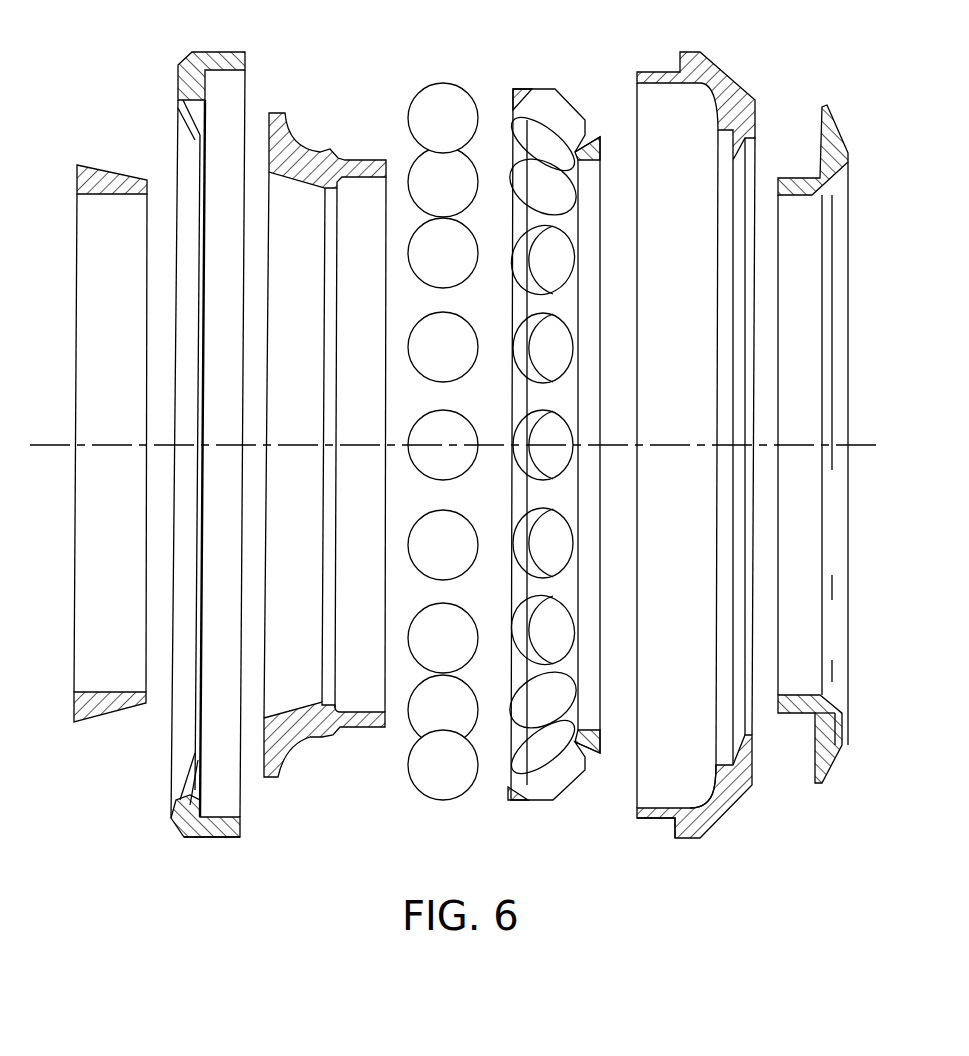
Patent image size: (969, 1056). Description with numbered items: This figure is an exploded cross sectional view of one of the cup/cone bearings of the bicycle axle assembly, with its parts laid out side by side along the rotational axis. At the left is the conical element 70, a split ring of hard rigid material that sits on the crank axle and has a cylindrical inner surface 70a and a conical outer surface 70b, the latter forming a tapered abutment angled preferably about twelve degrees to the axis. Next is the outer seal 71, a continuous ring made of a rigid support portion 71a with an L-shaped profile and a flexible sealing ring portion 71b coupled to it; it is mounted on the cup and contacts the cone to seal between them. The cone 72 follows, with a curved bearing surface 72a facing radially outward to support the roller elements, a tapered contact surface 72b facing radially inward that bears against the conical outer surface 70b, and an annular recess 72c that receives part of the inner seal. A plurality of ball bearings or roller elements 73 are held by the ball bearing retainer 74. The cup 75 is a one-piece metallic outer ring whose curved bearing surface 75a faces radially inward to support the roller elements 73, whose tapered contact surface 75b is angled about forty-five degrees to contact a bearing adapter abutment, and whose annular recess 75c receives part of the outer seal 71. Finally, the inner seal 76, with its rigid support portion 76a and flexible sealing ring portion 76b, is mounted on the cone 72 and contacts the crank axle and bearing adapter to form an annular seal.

The conical element 70 is at (101, 163).
The cylindrical inner surface 70a is at (105, 692).
The conical outer surface 70b is at (103, 712).
The outer seal 71 is at (222, 47).
The rigid support portion 71a is at (222, 818).
The flexible sealing ring portion 71b is at (208, 840).
The cone 72 is at (278, 106).
The curved bearing surface 72a is at (301, 743).
The tapered contact surface 72b is at (295, 704).
The annular recess 72c is at (352, 708).
The roller elements 73 is at (435, 81).
The ball bearing retainer 74 is at (546, 84).
The cup 75 is at (722, 58).
The curved bearing surface 75a is at (700, 800).
The tapered contact surface 75b is at (722, 812).
The annular recess 75c is at (650, 822).
The inner seal 76 is at (840, 125).
The rigid support portion 76a is at (795, 713).
The flexible sealing ring portion 76b is at (820, 690).